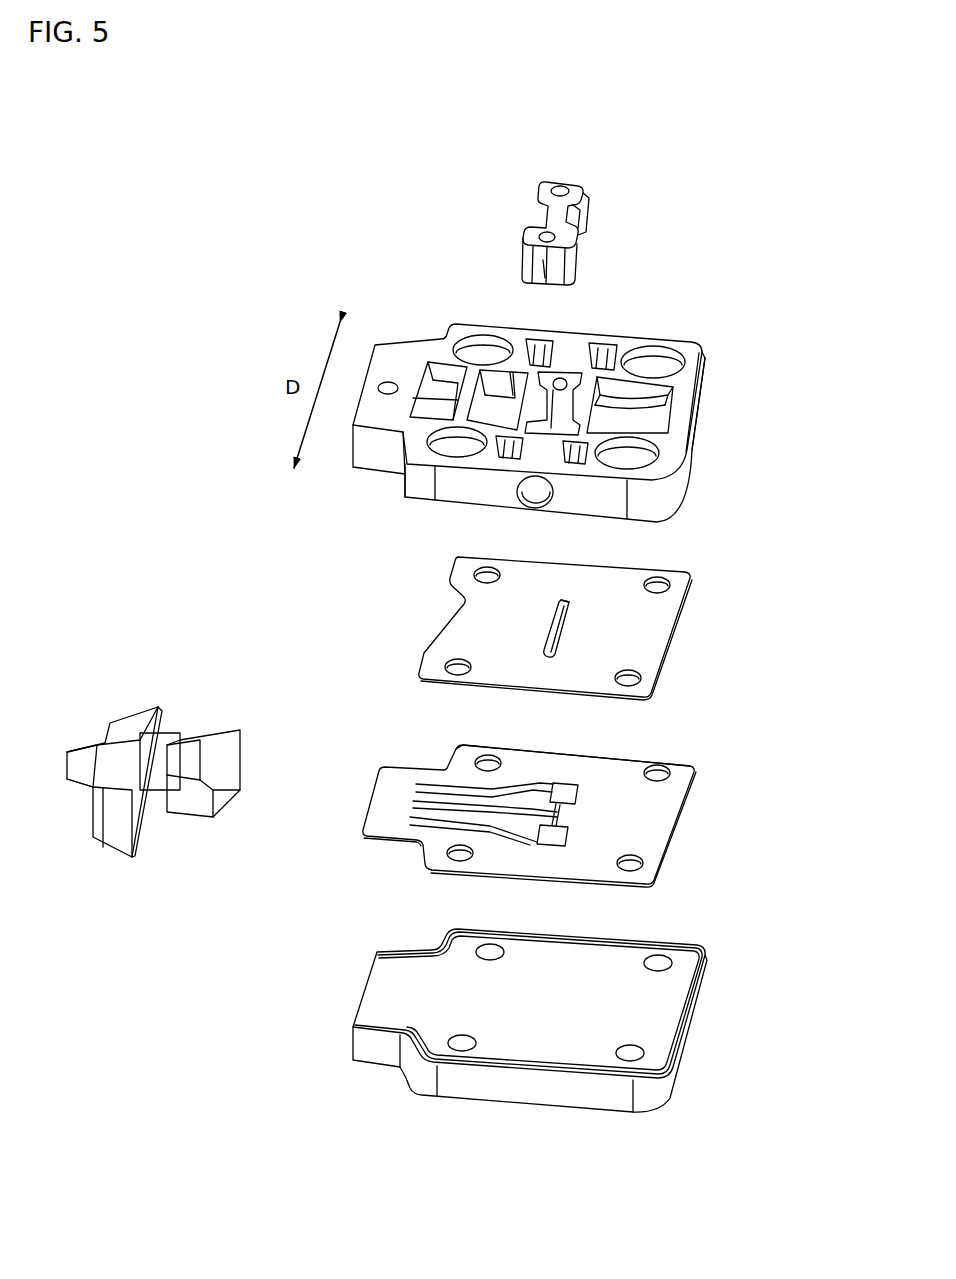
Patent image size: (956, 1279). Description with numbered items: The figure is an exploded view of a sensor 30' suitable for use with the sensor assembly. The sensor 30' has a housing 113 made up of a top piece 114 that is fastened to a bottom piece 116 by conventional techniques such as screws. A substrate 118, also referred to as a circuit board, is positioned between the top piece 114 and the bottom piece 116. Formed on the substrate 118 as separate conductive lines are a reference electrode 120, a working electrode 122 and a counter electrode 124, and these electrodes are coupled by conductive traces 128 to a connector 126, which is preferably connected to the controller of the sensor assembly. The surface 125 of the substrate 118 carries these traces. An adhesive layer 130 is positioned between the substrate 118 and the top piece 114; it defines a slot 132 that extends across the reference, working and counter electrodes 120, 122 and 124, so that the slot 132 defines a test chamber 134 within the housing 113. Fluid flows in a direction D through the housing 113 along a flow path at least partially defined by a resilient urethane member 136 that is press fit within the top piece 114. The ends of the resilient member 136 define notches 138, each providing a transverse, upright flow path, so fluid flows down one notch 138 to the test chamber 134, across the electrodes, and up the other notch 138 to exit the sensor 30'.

The sensor 30' is at (215, 263).
The resilient member 136 is at (583, 195).
The notches 138 is at (543, 273).
The top piece 114 is at (700, 347).
The housing 113 is at (708, 425).
The test chamber 134 is at (562, 601).
The slot 132 is at (567, 622).
The adhesive layer 130 is at (680, 633).
The conductive traces 128 is at (420, 785).
The circuit substrate surface 125 is at (548, 756).
The counter electrode 124 is at (575, 787).
The working electrode 122 is at (560, 815).
The substrate 118 is at (673, 835).
The reference electrode 120 is at (557, 838).
The connector 126 is at (93, 837).
The bottom piece 116 is at (690, 1040).